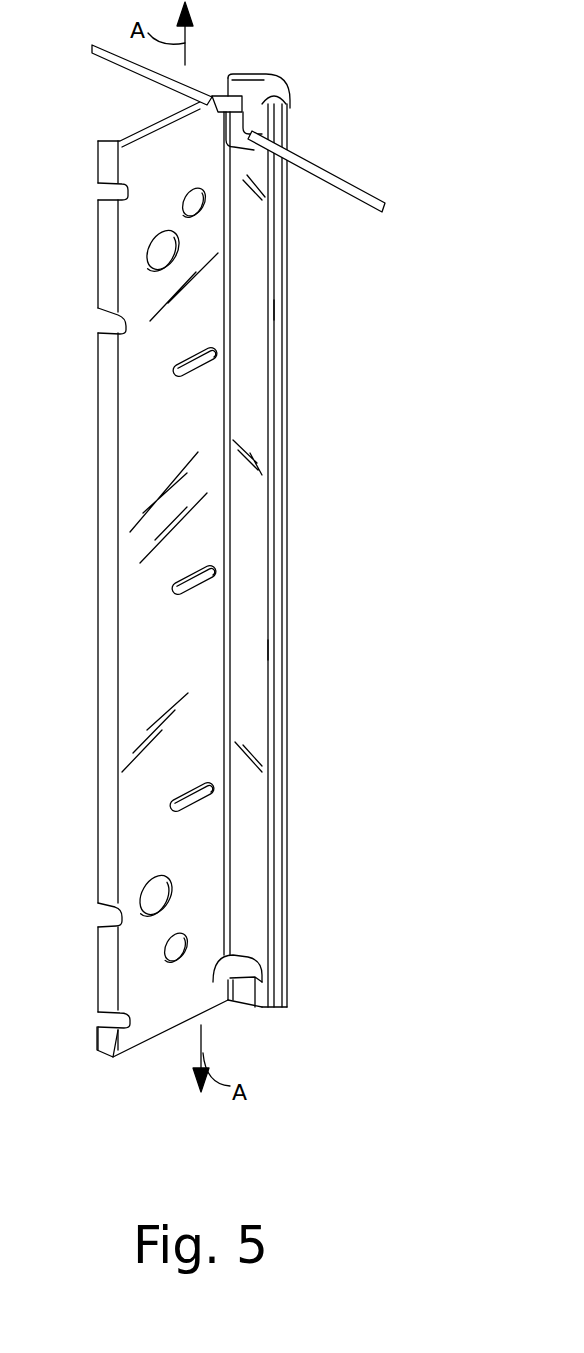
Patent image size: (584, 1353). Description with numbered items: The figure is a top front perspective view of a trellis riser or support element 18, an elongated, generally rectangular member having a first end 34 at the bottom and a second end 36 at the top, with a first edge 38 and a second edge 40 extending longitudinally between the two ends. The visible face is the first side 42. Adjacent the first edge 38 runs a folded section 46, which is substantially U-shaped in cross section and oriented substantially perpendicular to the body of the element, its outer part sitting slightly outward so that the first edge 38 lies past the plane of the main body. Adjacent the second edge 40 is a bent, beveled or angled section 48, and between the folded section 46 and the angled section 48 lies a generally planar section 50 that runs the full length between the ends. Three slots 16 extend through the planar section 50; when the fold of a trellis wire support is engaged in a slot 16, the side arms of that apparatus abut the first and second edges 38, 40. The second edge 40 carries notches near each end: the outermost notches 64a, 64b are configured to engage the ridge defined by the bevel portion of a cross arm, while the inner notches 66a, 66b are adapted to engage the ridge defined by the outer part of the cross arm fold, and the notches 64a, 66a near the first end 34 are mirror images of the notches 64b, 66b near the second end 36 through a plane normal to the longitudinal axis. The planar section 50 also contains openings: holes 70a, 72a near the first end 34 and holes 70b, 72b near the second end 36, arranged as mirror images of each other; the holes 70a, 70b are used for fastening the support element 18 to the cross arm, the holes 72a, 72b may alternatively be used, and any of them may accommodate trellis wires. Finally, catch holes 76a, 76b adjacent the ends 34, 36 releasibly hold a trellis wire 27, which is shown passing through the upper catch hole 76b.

The slots 16 is at (205, 357).
The support element 18 is at (385, 1040).
The trellis wire 27 is at (318, 163).
The first end 34 is at (210, 1012).
The second end 36 is at (193, 104).
The first edge 38 is at (223, 90).
The second edge 40 is at (97, 430).
The first side 42 is at (203, 507).
The folded section 46 is at (277, 542).
The angled section 48 is at (105, 478).
The planar section 50 is at (203, 652).
The notch 64a is at (103, 1018).
The notch 64b is at (105, 192).
The notch 66a is at (108, 908).
The notch 66b is at (103, 320).
The hole 70a is at (170, 963).
The hole 70b is at (185, 195).
The opening 72a is at (157, 892).
The opening 72b is at (158, 252).
The catch hole 76a is at (235, 963).
The catch hole 76b is at (230, 118).